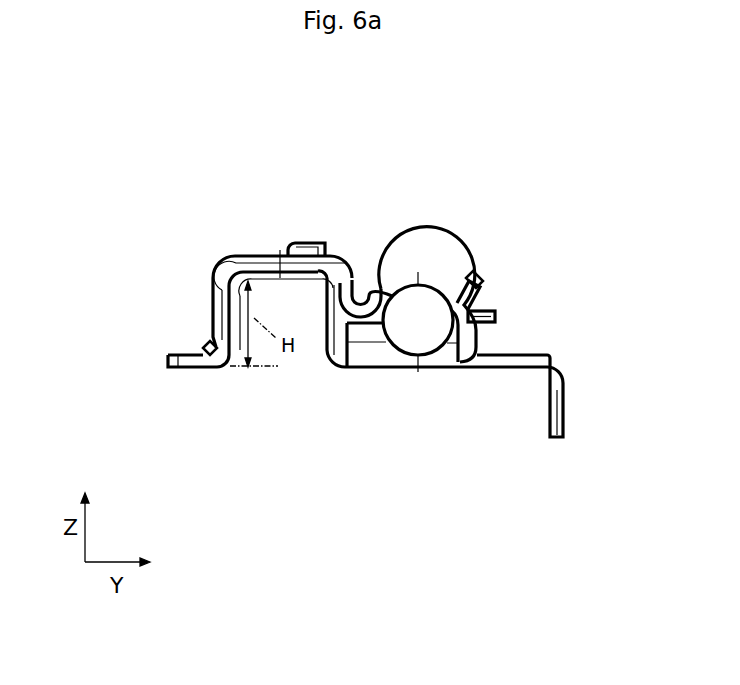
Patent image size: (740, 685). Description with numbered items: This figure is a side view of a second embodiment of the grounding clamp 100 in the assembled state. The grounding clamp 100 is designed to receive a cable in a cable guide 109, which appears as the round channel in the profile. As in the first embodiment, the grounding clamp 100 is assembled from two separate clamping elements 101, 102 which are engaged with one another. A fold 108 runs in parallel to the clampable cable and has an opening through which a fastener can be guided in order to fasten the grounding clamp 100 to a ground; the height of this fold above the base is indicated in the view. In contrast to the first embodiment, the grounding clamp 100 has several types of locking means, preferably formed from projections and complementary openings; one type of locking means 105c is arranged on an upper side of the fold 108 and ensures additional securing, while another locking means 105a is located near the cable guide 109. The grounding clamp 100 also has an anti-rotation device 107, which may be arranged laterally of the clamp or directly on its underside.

The grounding clamp 100 is at (366, 134).
The clamping element 101 is at (348, 266).
The clamping element 102 is at (228, 366).
The locking means 105a is at (477, 300).
The locking means 105c is at (300, 247).
The anti-rotation device 107 is at (565, 388).
The fold 108 is at (252, 265).
The cable guide 109 is at (425, 306).